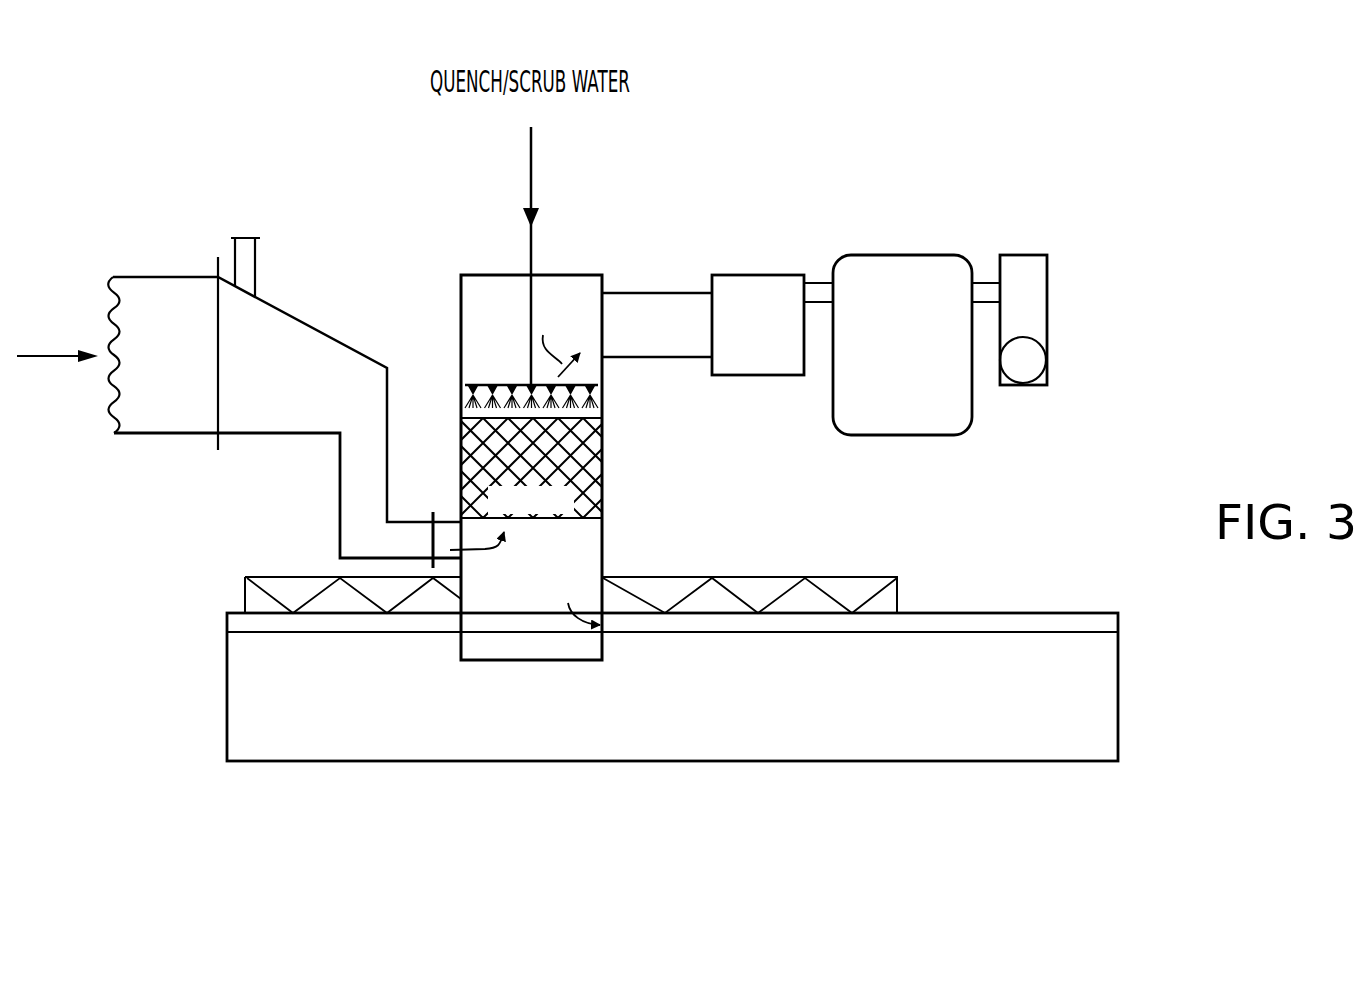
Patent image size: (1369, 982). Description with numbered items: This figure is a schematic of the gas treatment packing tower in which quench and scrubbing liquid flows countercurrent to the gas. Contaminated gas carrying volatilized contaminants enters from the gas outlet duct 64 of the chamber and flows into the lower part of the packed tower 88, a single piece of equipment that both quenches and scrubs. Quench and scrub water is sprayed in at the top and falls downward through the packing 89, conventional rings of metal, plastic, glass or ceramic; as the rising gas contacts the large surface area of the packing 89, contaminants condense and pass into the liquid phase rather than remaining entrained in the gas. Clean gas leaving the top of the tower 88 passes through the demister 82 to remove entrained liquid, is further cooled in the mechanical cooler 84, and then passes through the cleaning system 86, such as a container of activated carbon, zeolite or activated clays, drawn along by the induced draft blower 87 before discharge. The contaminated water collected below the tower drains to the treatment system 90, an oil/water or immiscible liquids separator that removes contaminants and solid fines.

The gas outlet duct 64 is at (55, 357).
The demister 82 is at (634, 302).
The mechanical cooler 84 is at (745, 283).
The cleaning system 86 is at (888, 268).
The induced draft blower 87 is at (1037, 298).
The packed tower 88 is at (461, 328).
The packing 89 is at (602, 494).
The treatment system 90 is at (993, 613).